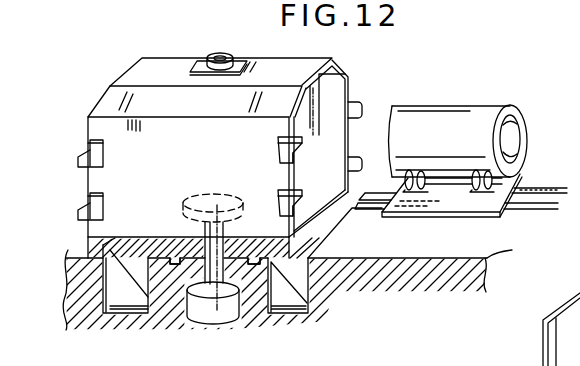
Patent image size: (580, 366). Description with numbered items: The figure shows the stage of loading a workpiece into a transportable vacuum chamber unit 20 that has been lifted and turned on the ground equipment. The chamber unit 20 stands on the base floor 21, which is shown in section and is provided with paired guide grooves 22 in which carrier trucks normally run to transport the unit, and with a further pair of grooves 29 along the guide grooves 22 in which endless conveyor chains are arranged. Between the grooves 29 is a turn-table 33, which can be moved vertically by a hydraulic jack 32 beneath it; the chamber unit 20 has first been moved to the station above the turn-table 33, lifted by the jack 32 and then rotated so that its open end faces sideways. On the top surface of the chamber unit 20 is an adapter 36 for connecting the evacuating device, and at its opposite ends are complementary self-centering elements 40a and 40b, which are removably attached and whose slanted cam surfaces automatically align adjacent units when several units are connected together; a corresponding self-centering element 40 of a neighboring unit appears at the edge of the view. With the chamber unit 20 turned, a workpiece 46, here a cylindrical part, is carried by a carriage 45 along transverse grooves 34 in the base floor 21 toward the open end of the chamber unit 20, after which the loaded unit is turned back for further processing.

The vacuum chamber unit 20 is at (164, 70).
The base floor 21 is at (358, 259).
The guide grooves 22 is at (132, 312).
The grooves 29 is at (174, 267).
The hydraulic jack 32 is at (208, 316).
The turn-table 33 is at (186, 204).
The transverse grooves 34 is at (551, 188).
The adapter 36 is at (221, 65).
The tab 40 is at (561, 329).
The self-centering elements 40a is at (278, 147).
The self-centering elements 40b is at (104, 159).
The carriage 45 is at (448, 196).
The workpiece 46 is at (479, 126).